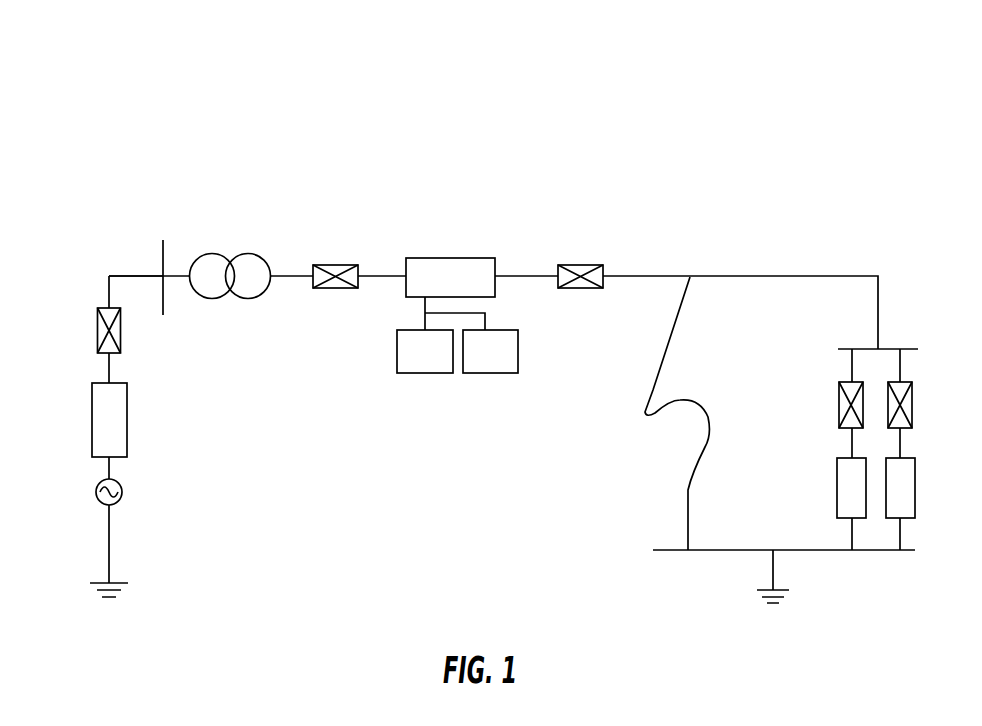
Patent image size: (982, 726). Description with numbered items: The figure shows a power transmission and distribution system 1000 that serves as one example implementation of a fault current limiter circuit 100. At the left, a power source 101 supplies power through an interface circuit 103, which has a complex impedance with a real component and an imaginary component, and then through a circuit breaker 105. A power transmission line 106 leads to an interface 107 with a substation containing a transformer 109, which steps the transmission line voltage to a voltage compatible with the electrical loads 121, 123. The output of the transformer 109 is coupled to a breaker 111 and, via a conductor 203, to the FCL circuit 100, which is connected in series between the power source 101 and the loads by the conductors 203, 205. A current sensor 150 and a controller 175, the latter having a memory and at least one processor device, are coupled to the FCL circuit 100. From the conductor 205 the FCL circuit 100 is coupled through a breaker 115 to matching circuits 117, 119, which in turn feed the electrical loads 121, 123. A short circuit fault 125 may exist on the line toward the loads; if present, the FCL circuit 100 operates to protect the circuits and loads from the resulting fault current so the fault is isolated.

The power transmission and distribution system 1000 is at (481, 78).
The power source 101 is at (95, 500).
The interface circuit 103 is at (92, 423).
The circuit breaker 105 is at (97, 340).
The power transmission line 106 is at (130, 274).
The interface 107 is at (165, 255).
The transformer 109 is at (253, 255).
The breaker 111 is at (327, 265).
The conductor 203 is at (400, 270).
The fault current limiter circuit 100 is at (454, 258).
The conductor 205 is at (543, 270).
The breaker 115 is at (577, 265).
The current sensor 150 is at (445, 366).
The controller 175 is at (510, 366).
The short circuit fault 125 is at (647, 387).
The matching circuit 117 is at (838, 413).
The matching circuit 119 is at (912, 413).
The electrical load 121 is at (837, 500).
The electrical load 123 is at (915, 500).